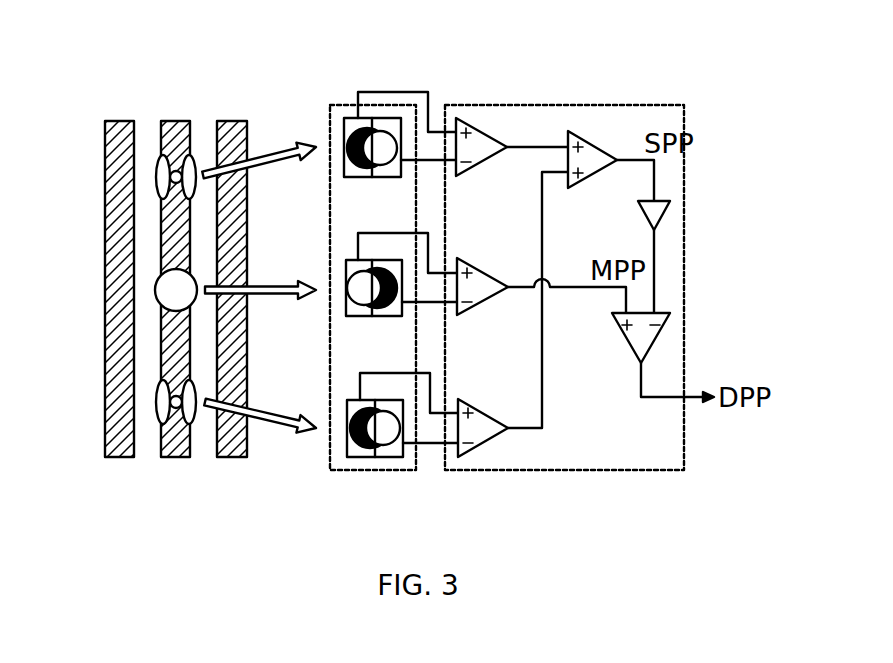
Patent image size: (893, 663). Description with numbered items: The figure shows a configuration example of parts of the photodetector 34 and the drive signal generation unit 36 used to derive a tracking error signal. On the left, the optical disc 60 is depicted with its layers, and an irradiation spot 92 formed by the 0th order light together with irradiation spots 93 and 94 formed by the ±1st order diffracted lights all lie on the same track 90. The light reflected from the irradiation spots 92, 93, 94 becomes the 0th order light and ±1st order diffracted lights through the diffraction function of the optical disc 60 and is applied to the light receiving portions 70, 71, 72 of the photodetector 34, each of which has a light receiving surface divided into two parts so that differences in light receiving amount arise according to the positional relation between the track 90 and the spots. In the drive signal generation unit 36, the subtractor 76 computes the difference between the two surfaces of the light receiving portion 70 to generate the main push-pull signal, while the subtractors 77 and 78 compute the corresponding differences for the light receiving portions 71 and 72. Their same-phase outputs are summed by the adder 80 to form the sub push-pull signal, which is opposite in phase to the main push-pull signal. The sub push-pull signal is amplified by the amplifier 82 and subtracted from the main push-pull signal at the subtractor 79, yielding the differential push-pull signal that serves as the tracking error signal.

The photodetector 34 is at (345, 471).
The drive signal generation unit 36 is at (585, 471).
The optical disc 60 is at (184, 80).
The light receiving portion 70 is at (346, 260).
The light receiving portion 71 is at (352, 118).
The light receiving portion 72 is at (348, 400).
The subtractor 76 is at (470, 311).
The subtractor 77 is at (470, 172).
The subtractor 78 is at (473, 452).
The subtractor 79 is at (626, 342).
The adder 80 is at (575, 185).
The amplifier 82 is at (670, 207).
The track 90 is at (131, 458).
The irradiation spot 92 is at (138, 290).
The irradiation spot 93 is at (138, 177).
The irradiation spot 94 is at (138, 402).